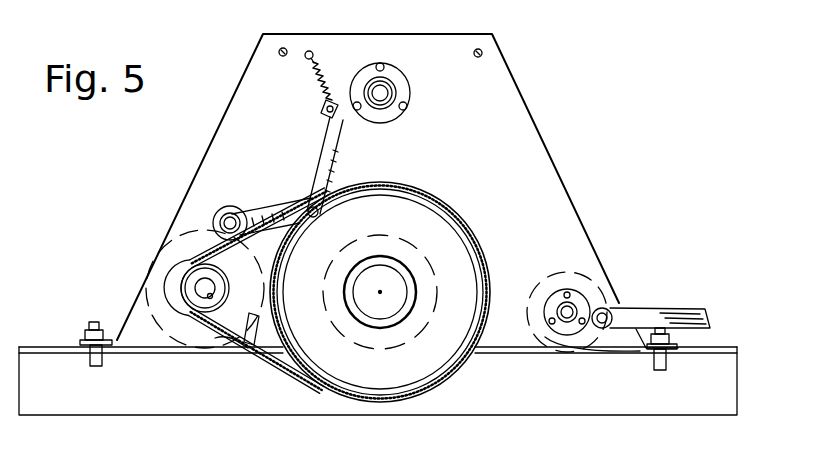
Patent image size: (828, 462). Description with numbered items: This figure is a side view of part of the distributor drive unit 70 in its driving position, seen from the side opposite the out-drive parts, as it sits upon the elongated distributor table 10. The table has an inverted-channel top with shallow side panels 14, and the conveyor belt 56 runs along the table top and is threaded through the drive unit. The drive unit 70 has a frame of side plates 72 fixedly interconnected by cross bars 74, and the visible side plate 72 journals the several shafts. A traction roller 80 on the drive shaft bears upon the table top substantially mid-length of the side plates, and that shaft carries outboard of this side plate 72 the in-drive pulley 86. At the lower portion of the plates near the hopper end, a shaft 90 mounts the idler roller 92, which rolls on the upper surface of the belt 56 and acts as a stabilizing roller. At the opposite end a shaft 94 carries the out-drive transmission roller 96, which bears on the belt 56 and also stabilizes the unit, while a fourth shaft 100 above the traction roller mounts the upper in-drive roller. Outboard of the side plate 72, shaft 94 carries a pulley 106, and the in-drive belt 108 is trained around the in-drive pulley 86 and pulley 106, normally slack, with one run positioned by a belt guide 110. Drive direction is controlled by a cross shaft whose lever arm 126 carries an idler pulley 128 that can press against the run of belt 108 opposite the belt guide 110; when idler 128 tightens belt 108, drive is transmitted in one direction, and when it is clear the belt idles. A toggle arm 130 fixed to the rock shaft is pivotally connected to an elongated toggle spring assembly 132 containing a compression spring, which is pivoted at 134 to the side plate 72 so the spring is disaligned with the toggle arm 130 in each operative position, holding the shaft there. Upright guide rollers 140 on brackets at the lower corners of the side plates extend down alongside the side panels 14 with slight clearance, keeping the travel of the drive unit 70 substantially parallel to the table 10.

The distributor table 10 is at (90, 422).
The side panels 14 is at (141, 410).
The conveyor belt 56 is at (716, 354).
The distributor drive unit 70 is at (532, 111).
The side plates 72 is at (527, 147).
The cross bars 74 is at (278, 53).
The traction roller 80 is at (387, 236).
The in-drive pulley 86 is at (441, 368).
The shaft 90 is at (565, 304).
The roller 92 is at (548, 285).
The shaft 94 is at (208, 289).
The out-drive transmission roller 96 is at (185, 238).
The fourth shaft 100 is at (381, 93).
The pulley 106 is at (194, 300).
The in-drive belt 108 is at (292, 372).
The belt guide 110 is at (250, 342).
The lever arm 126 is at (283, 210).
The idler pulley 128 is at (229, 206).
The toggle arm 130 is at (328, 144).
The toggle spring assembly 132 is at (325, 85).
The pivot 134 is at (306, 57).
The upright rollers 140 is at (92, 360).